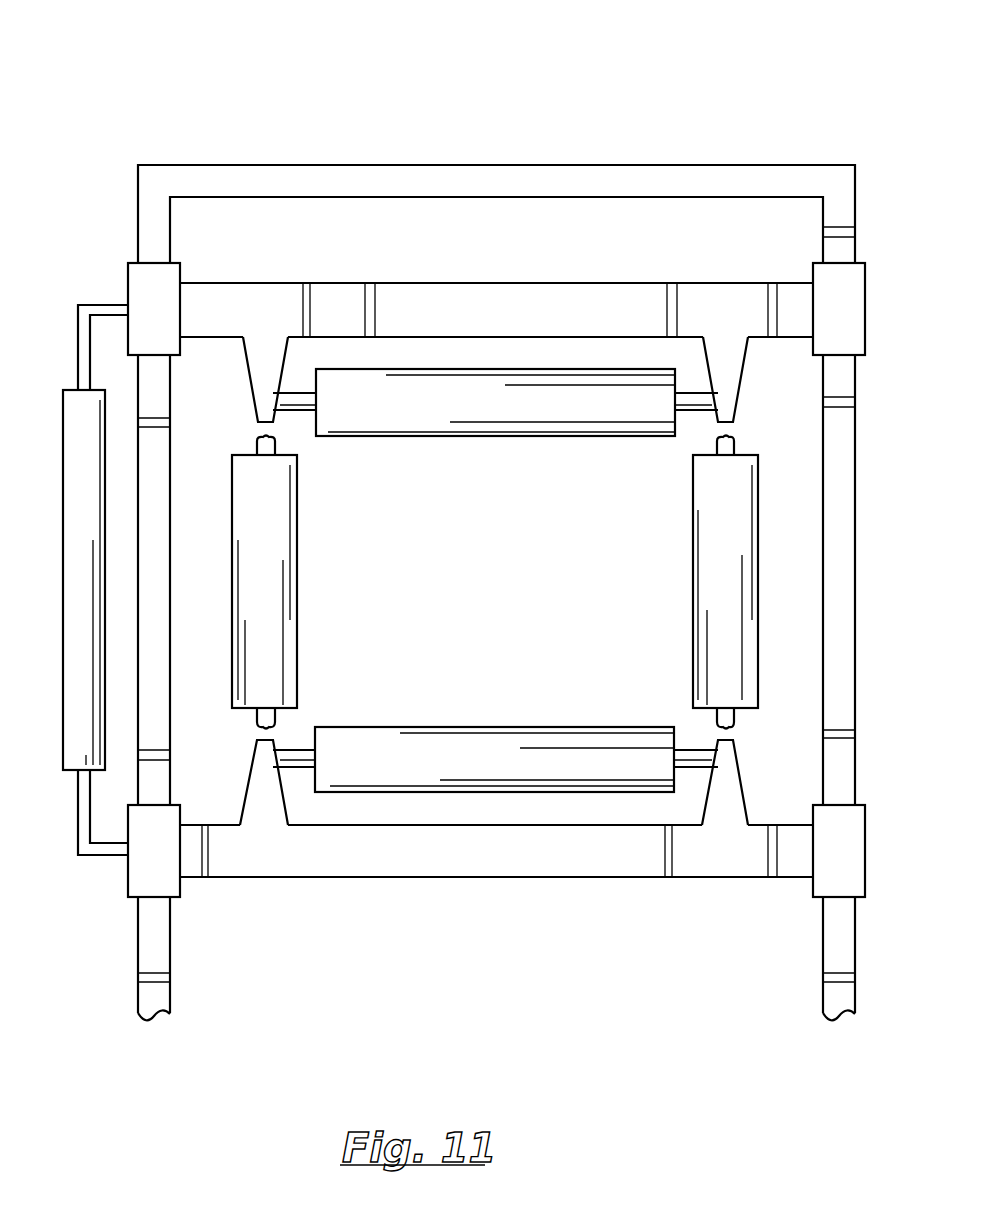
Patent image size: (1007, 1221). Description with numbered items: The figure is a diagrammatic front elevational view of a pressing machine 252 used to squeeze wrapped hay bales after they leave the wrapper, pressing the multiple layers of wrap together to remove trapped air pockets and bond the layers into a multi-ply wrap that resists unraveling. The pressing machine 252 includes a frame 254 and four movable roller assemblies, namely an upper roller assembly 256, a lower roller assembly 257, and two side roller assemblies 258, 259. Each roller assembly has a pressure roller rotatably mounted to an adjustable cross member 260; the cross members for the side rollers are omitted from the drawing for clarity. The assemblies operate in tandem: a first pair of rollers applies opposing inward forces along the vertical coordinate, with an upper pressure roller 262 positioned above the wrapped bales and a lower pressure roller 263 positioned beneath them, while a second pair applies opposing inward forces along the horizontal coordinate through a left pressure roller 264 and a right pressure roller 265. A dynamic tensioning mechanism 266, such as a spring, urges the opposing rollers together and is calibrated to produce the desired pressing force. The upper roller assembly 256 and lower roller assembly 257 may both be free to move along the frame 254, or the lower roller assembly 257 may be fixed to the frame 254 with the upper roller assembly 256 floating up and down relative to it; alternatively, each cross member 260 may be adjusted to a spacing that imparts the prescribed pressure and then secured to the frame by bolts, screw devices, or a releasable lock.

The pressing machine 252 is at (564, 112).
The frame 254 is at (735, 182).
The upper roller assembly 256 is at (365, 258).
The lower roller assembly 257 is at (540, 879).
The roller assembly 258 is at (220, 493).
The roller assembly 259 is at (779, 493).
The adjustable cross member 260 is at (500, 312).
The upper pressure roller 262 is at (540, 403).
The lower pressure roller 263 is at (470, 757).
The left pressure roller 264 is at (263, 524).
The right pressure roller 265 is at (720, 533).
The dynamic tensioning mechanism 266 is at (82, 428).